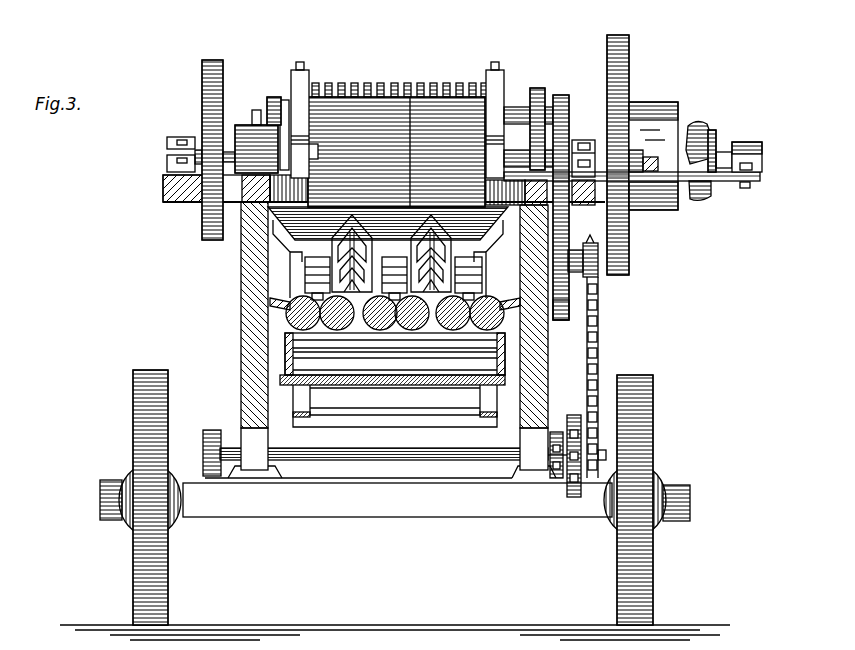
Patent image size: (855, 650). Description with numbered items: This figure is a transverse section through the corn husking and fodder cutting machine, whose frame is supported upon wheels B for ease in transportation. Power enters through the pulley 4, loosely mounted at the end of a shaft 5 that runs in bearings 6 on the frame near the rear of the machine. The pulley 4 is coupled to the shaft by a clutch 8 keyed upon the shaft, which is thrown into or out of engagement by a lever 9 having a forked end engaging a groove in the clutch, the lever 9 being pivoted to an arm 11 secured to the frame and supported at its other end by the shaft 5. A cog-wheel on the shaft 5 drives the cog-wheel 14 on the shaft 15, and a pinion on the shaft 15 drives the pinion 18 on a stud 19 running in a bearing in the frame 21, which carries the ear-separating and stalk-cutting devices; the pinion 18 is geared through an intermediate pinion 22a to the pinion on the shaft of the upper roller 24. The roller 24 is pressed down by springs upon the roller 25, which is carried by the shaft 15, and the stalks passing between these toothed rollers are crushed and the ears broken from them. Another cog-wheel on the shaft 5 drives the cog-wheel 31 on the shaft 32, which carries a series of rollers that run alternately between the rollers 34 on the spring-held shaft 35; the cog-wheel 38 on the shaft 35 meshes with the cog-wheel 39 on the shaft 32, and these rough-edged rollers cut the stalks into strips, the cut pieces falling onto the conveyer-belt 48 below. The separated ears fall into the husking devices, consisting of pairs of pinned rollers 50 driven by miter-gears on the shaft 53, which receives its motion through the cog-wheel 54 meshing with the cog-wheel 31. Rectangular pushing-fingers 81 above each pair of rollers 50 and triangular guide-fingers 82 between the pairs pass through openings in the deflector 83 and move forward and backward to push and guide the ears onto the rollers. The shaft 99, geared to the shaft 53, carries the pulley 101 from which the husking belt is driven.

The pulley 4 is at (658, 104).
The shaft 5 is at (746, 143).
The bearings 6 is at (421, 32).
The clutch 8 is at (716, 134).
The lever 9 is at (703, 121).
The arm 11 is at (653, 182).
The cog-wheel 14 is at (202, 80).
The shaft 15 is at (228, 148).
The pinion 18 is at (208, 200).
The stud 19 is at (246, 220).
The frame 21 is at (296, 88).
The intermediate pinion 22a is at (273, 97).
The roller 24 is at (435, 112).
The roller 25 is at (326, 146).
The cog-wheel 31 is at (564, 100).
The shaft 32 is at (578, 154).
The rollers 34 is at (381, 83).
The shaft 35 is at (518, 108).
The cog-wheel 38 is at (540, 89).
The cog-wheel 39 is at (548, 152).
The conveyer-belt 48 is at (311, 390).
The rollers 50 is at (486, 330).
The shaft 53 is at (592, 275).
The cog-wheel 54 is at (561, 320).
The pushing-fingers 81 is at (318, 262).
The guide-fingers 82 is at (495, 262).
The deflector 83 is at (431, 246).
The shaft 99 is at (402, 456).
The pulley 101 is at (211, 429).
The wheels B is at (168, 566).